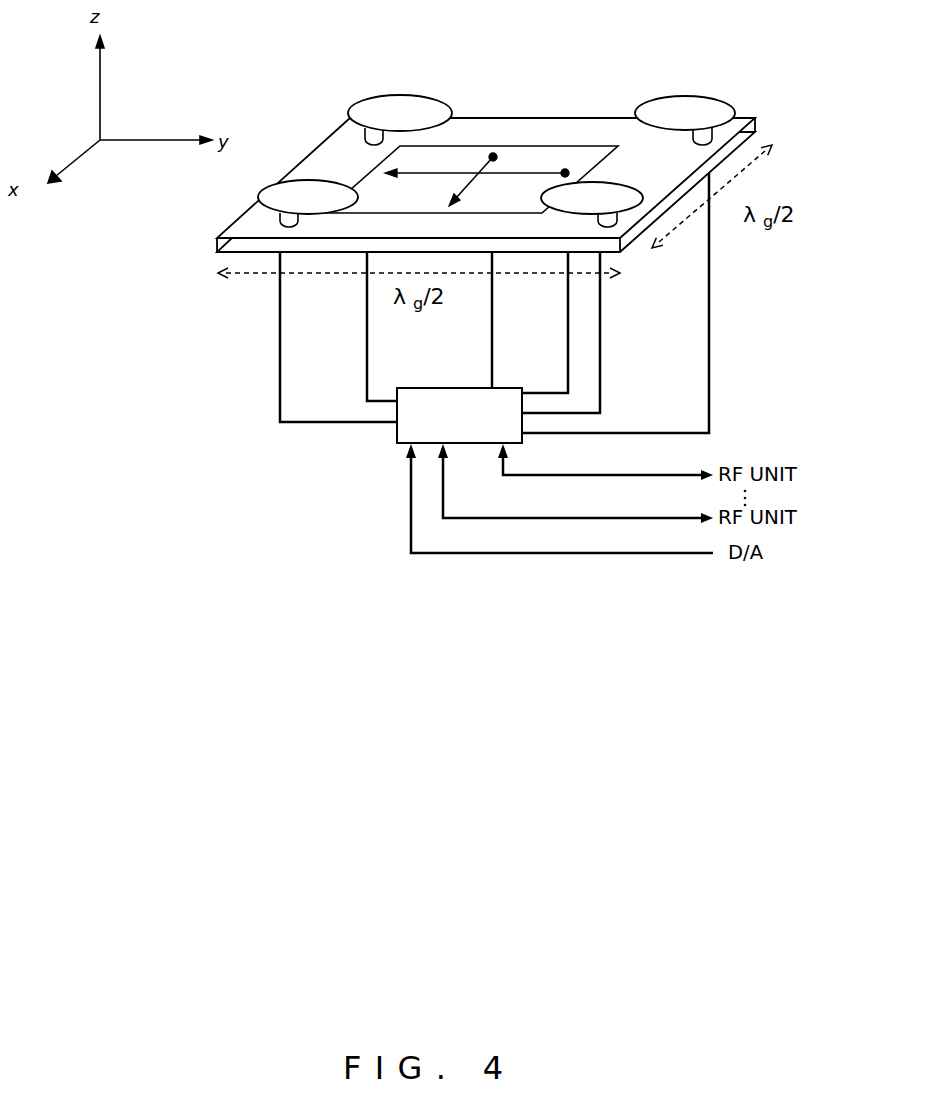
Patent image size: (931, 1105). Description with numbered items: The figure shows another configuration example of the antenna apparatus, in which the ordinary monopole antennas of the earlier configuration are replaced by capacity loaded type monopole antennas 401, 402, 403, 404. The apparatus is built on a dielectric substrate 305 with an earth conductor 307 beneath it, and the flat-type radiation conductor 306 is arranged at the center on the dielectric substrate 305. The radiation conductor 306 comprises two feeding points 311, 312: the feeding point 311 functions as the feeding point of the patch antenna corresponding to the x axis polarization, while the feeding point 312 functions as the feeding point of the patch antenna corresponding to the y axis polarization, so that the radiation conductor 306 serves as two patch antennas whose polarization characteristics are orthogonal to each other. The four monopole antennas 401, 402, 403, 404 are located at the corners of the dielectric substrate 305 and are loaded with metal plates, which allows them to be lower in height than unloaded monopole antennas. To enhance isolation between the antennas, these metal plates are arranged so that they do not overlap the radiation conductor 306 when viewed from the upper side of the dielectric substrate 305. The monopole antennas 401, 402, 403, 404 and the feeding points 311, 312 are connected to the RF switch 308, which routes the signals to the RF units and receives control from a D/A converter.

The dielectric substrate 305 is at (219, 237).
The radiation conductor 306 is at (360, 181).
The earth conductor 307 is at (220, 252).
The RF switch 308 is at (395, 433).
The feeding point 311 is at (493, 157).
The feeding point 312 is at (565, 173).
The monopole antenna 401 is at (258, 197).
The monopole antenna 402 is at (373, 96).
The monopole antenna 403 is at (713, 96).
The monopole antenna 404 is at (606, 182).